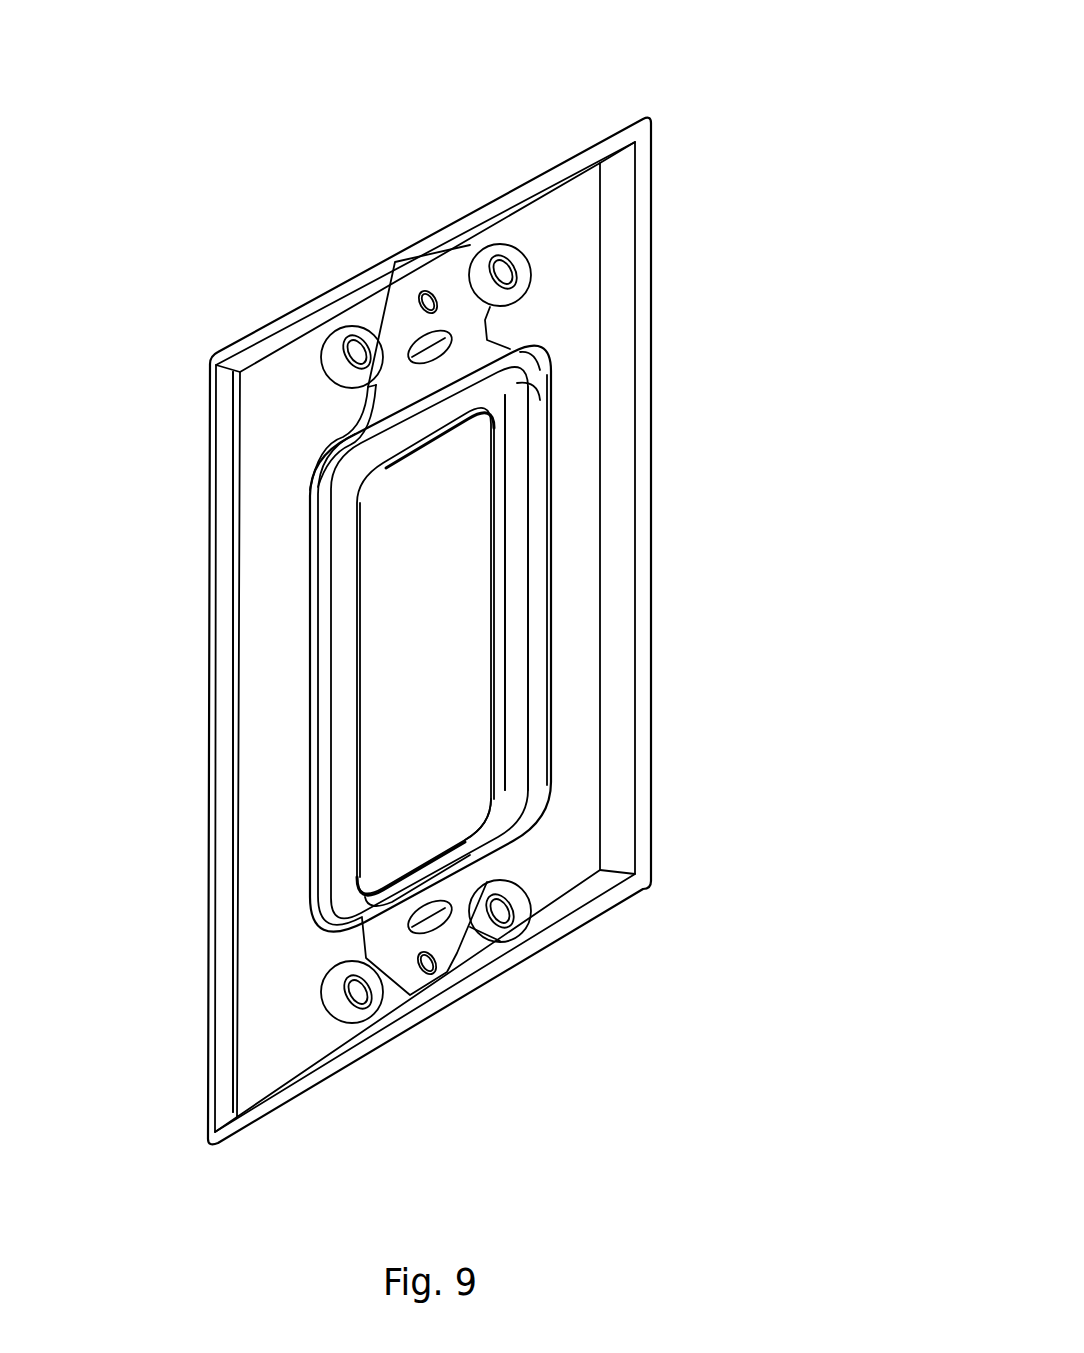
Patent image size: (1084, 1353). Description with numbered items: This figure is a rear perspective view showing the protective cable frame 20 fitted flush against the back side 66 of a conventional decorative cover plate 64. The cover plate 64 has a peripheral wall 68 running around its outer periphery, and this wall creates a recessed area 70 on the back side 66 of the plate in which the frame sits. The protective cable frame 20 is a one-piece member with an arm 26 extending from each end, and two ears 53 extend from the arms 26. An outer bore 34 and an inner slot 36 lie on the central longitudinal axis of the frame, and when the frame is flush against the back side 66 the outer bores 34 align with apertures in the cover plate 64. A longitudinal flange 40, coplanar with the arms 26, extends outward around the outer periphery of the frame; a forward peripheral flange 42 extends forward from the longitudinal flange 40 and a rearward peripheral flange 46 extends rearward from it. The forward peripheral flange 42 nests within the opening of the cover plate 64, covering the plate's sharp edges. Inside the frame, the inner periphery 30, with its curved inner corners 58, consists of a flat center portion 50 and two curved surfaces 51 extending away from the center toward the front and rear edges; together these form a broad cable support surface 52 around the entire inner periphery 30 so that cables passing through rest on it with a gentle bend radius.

The protective cable frame 20 is at (430, 292).
The arm 26 is at (436, 620).
The inner periphery 30 is at (490, 580).
The outer bore 34 is at (424, 297).
The inner slot 36 is at (418, 346).
The longitudinal flange 40 is at (312, 682).
The forward peripheral flange 42 is at (490, 646).
The rearward peripheral flange 46 is at (540, 578).
The flat center portion 50 is at (510, 643).
The curved surfaces 51 is at (500, 708).
The cable support surface 52 is at (405, 843).
The ear 53 is at (490, 875).
The curved inner corner 58 is at (522, 392).
The decorative cover plate 64 is at (583, 138).
The back side 66 is at (266, 742).
The peripheral wall 68 is at (620, 378).
The recessed area 70 is at (568, 280).